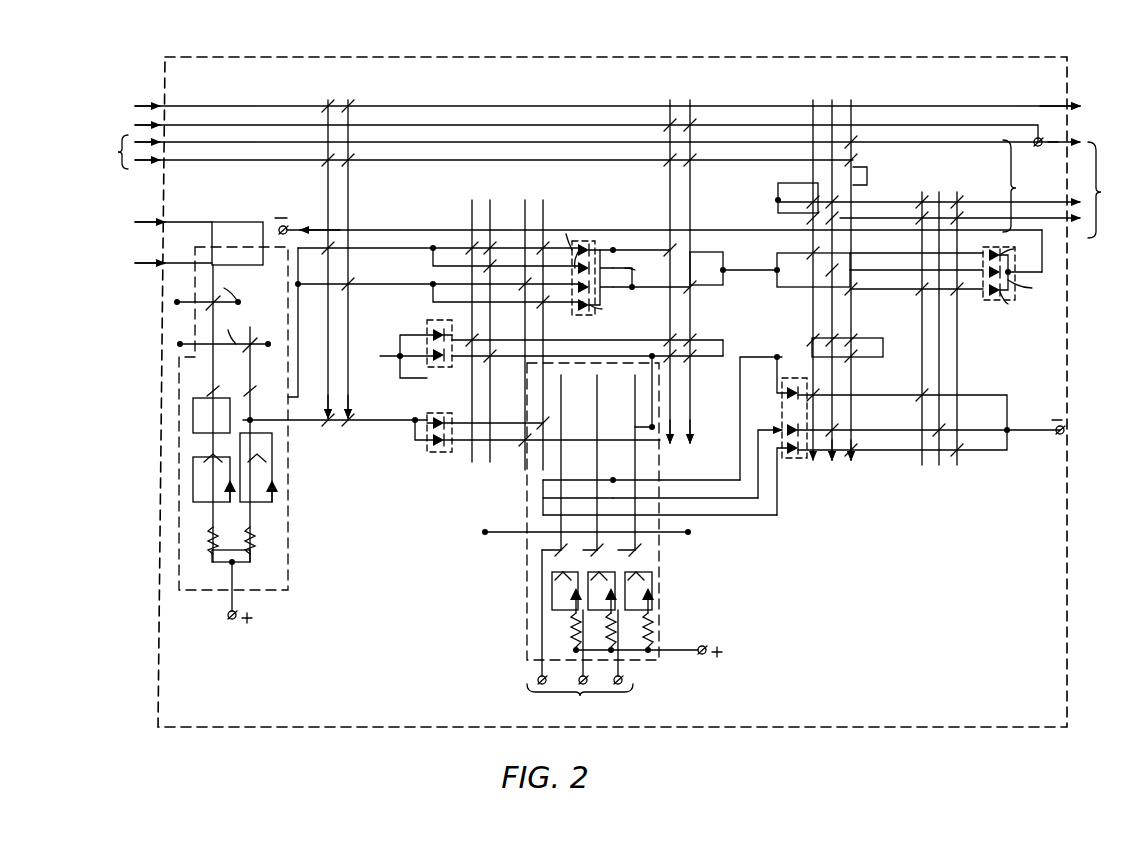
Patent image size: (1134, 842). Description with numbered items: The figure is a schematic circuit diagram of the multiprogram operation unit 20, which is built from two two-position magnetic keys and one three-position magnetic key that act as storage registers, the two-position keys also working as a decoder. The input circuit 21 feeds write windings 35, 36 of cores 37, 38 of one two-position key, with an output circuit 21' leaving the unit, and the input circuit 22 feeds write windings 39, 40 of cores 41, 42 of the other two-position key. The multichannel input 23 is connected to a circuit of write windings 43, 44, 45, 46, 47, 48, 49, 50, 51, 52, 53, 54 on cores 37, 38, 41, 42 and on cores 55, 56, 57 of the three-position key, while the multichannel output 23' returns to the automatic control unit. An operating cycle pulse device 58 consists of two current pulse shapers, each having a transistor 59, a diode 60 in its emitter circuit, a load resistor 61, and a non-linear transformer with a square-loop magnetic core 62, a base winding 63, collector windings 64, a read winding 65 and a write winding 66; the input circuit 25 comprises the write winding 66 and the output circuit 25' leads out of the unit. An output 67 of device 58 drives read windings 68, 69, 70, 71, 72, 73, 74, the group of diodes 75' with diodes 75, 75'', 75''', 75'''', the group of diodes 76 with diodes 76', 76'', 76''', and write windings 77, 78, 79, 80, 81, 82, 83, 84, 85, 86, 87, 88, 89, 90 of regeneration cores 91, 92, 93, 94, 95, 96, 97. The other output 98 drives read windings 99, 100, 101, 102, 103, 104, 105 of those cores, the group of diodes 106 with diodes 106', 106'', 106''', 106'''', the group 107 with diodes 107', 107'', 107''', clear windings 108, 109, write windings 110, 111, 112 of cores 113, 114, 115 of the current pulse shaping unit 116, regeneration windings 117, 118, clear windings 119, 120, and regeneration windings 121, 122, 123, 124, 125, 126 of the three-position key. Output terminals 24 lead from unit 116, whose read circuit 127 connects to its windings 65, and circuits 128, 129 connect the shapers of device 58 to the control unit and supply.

The multiprogram operation unit 20 is at (1067, 566).
The input circuit 21 is at (586, 106).
The output circuit 21' is at (1062, 94).
The input circuit 22 is at (571, 131).
The multichannel input 23 is at (582, 160).
The multichannel output 23' is at (955, 189).
The output terminals 24 is at (580, 638).
The input circuit 25 is at (152, 263).
The output circuit 25' is at (151, 222).
The write winding 35 is at (322, 104).
The write winding 36 is at (350, 104).
The core 37 is at (328, 450).
The core 38 is at (352, 450).
The write winding 39 is at (664, 110).
The write winding 40 is at (692, 110).
The core 41 is at (672, 446).
The core 42 is at (702, 446).
The write winding 43 is at (322, 164).
The write winding 44 is at (352, 164).
The write winding 45 is at (662, 168).
The write winding 46 is at (694, 168).
The write winding 47 is at (808, 122).
The write winding 48 is at (830, 116).
The write winding 49 is at (856, 122).
The write winding 50 is at (792, 198).
The write winding 51 is at (802, 212).
The write winding 52 is at (842, 194).
The write winding 53 is at (834, 214).
The write winding 54 is at (854, 164).
The core 55 is at (816, 478).
The core 56 is at (834, 464).
The core 57 is at (856, 464).
The operating cycle pulse device 58 is at (292, 516).
The transistor 59 is at (270, 460).
The diode 60 is at (270, 502).
The load resistor 61 is at (214, 553).
The magnetic core 62 is at (238, 286).
The winding 63 is at (216, 415).
The winding 64 is at (206, 394).
The read winding 65 is at (233, 328).
The write winding 66 is at (214, 240).
The output 67 is at (297, 380).
The read winding 68 is at (324, 250).
The read winding 69 is at (352, 284).
The read winding 70 is at (668, 250).
The read winding 71 is at (704, 288).
The read winding 72 is at (806, 252).
The read winding 73 is at (814, 276).
The read winding 74 is at (850, 282).
The diode 75 is at (631, 286).
The group of diodes 75' is at (585, 219).
The diode 75'' is at (629, 271).
The diode 75''' is at (607, 318).
The diode 75'''' is at (603, 238).
The group of diodes 76 is at (1026, 265).
The diode 76' is at (1019, 249).
The diode 76'' is at (1037, 291).
The diode 76''' is at (1018, 311).
The write winding 77 is at (468, 242).
The write winding 78 is at (444, 260).
The write winding 79 is at (492, 242).
The write winding 80 is at (486, 276).
The write winding 81 is at (490, 262).
The write winding 82 is at (524, 296).
The write winding 83 is at (540, 242).
The write winding 84 is at (546, 304).
The write winding 85 is at (916, 222).
The write winding 86 is at (923, 254).
The write winding 87 is at (924, 238).
The write winding 88 is at (916, 288).
The write winding 89 is at (954, 228).
The write winding 90 is at (957, 290).
The regeneration core 91 is at (472, 202).
The regeneration core 92 is at (490, 202).
The regeneration core 93 is at (524, 202).
The regeneration core 94 is at (543, 202).
The regeneration core 95 is at (920, 315).
The regeneration core 96 is at (942, 315).
The regeneration core 97 is at (968, 315).
The output 98 is at (318, 424).
The read winding 99 is at (466, 342).
The read winding 100 is at (486, 356).
The read winding 101 is at (524, 422).
The read winding 102 is at (528, 446).
The read winding 103 is at (918, 398).
The read winding 104 is at (934, 428).
The read winding 105 is at (960, 456).
The group of diodes 106 is at (416, 386).
The diode 106' is at (439, 402).
The diode 106'' is at (443, 460).
The diode 106''' is at (417, 323).
The diode 106'''' is at (383, 363).
The group of diodes 107 is at (884, 434).
The diode 107' is at (768, 377).
The diode 107'' is at (767, 411).
The diode 107''' is at (801, 471).
The clear winding 108 is at (334, 418).
The clear winding 109 is at (348, 424).
The write winding 110 is at (562, 488).
The write winding 111 is at (599, 488).
The write winding 112 is at (636, 486).
The core 113 is at (561, 396).
The core 114 is at (607, 459).
The core 115 is at (636, 459).
The current pulse shaping unit 116 is at (660, 586).
The regeneration winding 117 is at (684, 342).
The regeneration winding 118 is at (724, 339).
The clear winding 119 is at (672, 378).
The clear winding 120 is at (686, 358).
The regeneration winding 121 is at (810, 392).
The regeneration winding 122 is at (836, 422).
The regeneration winding 123 is at (854, 452).
The regeneration winding 124 is at (808, 340).
The regeneration winding 125 is at (848, 340).
The regeneration winding 126 is at (858, 358).
The read circuit 127 is at (575, 531).
The circuit 128 is at (188, 302).
The circuit 129 is at (203, 344).